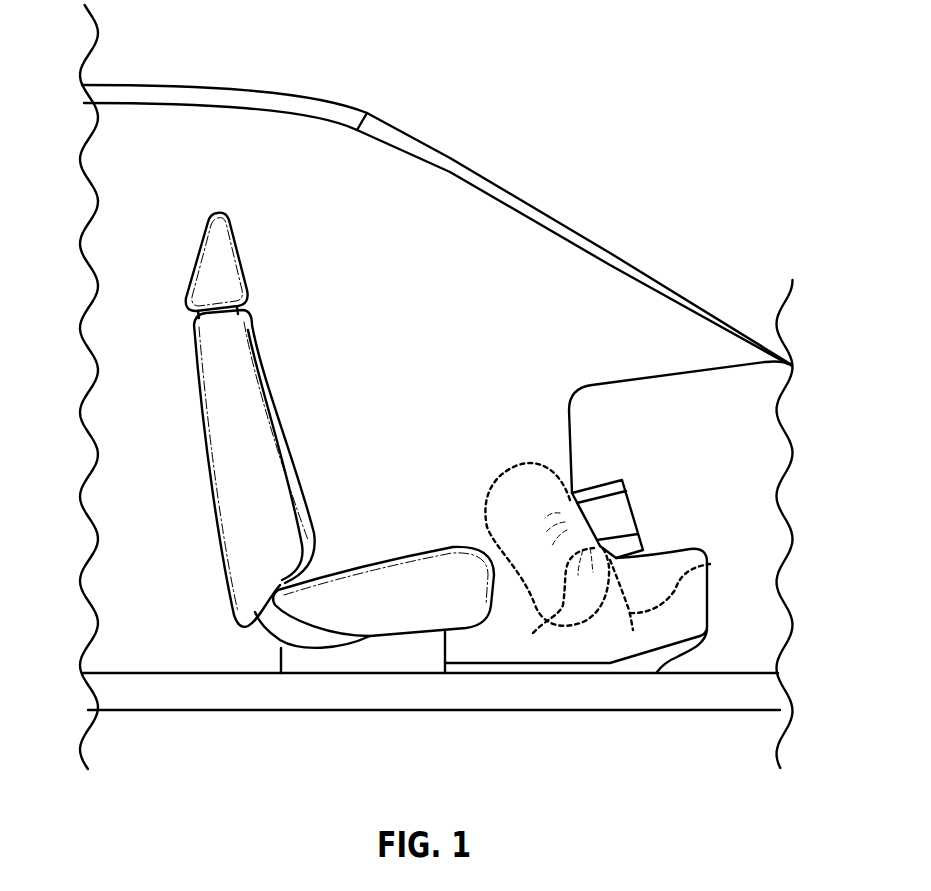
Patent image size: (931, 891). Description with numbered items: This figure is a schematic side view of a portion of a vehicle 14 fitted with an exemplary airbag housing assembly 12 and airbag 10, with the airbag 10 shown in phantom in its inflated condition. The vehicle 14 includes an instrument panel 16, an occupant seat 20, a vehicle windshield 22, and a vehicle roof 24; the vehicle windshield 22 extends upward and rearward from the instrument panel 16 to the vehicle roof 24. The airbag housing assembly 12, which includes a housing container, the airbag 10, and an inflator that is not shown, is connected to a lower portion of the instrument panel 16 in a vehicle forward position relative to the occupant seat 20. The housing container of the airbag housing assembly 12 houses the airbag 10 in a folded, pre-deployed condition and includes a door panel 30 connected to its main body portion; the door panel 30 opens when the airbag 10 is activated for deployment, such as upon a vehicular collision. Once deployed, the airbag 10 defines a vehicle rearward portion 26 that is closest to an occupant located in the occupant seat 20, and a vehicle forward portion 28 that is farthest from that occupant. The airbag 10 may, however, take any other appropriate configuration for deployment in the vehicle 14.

The airbag 10 is at (503, 470).
The airbag housing assembly 12 is at (656, 515).
The vehicle 14 is at (692, 202).
The instrument panel 16 is at (770, 443).
The occupant seat 20 is at (276, 396).
The vehicle windshield 22 is at (532, 205).
The vehicle roof 24 is at (272, 87).
The vehicle rearward portion 26 is at (490, 528).
The vehicle forward portion 28 is at (549, 601).
The door panel 30 is at (710, 564).